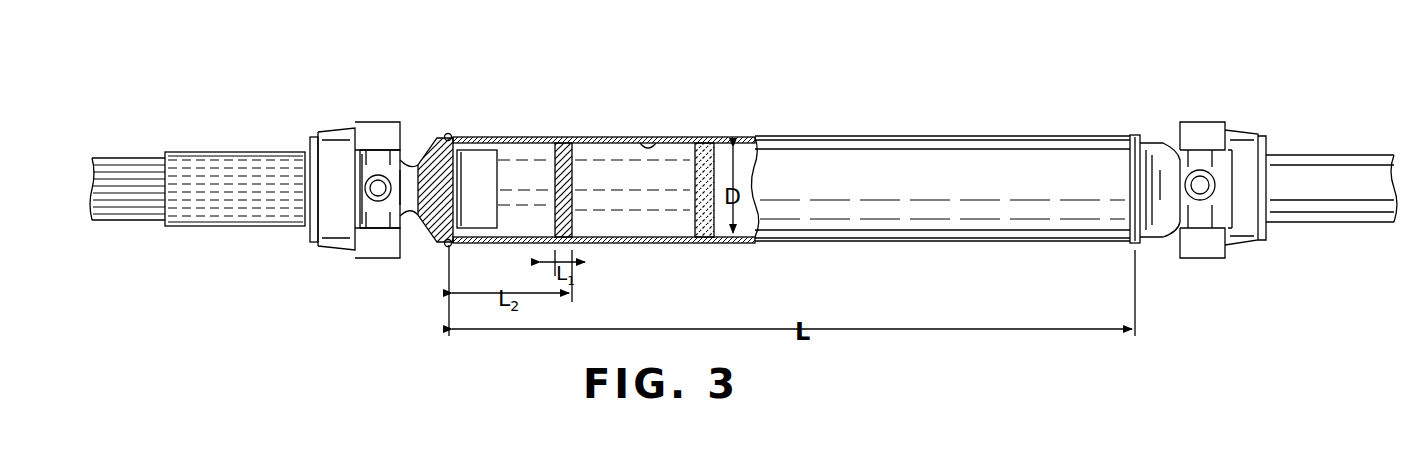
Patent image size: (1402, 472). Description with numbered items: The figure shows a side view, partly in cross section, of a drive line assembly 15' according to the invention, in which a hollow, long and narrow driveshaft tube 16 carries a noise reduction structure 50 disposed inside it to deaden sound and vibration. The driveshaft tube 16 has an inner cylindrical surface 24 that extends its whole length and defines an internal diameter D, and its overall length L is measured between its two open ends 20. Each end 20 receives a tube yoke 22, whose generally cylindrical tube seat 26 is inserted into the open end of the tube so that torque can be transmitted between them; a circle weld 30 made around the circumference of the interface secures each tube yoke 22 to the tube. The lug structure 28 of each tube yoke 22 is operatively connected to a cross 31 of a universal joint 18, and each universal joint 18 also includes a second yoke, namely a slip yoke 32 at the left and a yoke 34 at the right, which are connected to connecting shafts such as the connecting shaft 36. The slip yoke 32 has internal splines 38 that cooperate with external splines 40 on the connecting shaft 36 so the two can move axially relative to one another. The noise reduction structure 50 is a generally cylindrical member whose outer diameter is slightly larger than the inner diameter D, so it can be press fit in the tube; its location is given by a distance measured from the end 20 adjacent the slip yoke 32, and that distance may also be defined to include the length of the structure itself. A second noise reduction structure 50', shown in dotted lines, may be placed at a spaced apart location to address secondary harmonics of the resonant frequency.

The drive line assembly 15' is at (991, 71).
The driveshaft tube 16 is at (488, 134).
The universal joint 18 is at (340, 266).
The end 20 is at (458, 247).
The tube yoke 22 is at (424, 150).
The inner cylindrical surface 24 is at (643, 145).
The tube seat 26 is at (470, 150).
The lug structure 28 is at (408, 240).
The circle weld 30 is at (450, 134).
The cross 31 is at (392, 162).
The slip yoke 32 is at (336, 130).
The yoke 34 is at (1244, 135).
The connecting shaft 36 is at (154, 156).
The internal splines 38 is at (228, 176).
The external splines 40 is at (123, 178).
The noise reduction structure 50 is at (585, 160).
The second noise reduction structure 50' is at (733, 151).